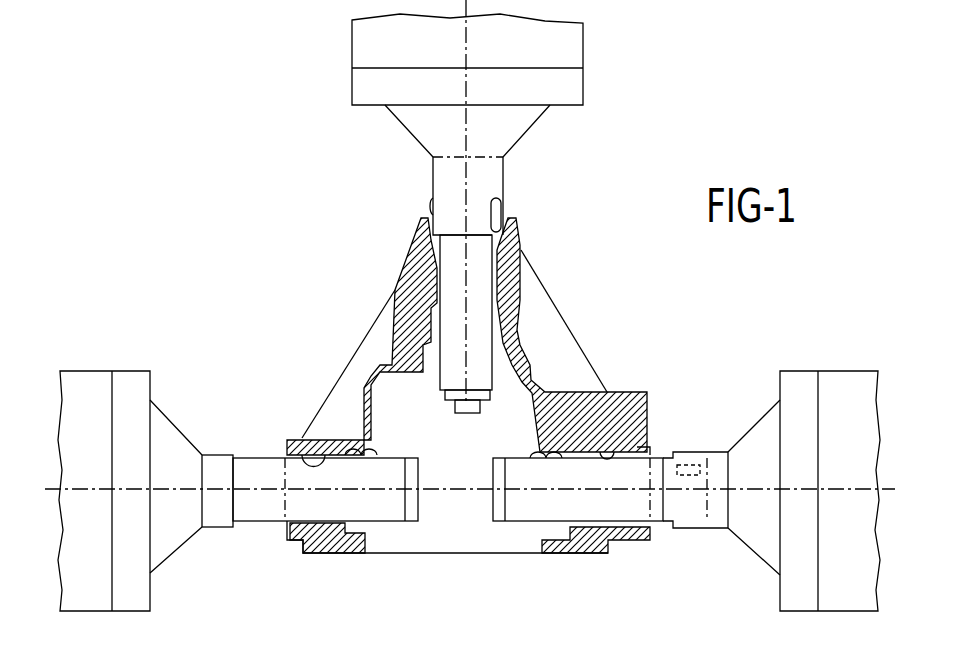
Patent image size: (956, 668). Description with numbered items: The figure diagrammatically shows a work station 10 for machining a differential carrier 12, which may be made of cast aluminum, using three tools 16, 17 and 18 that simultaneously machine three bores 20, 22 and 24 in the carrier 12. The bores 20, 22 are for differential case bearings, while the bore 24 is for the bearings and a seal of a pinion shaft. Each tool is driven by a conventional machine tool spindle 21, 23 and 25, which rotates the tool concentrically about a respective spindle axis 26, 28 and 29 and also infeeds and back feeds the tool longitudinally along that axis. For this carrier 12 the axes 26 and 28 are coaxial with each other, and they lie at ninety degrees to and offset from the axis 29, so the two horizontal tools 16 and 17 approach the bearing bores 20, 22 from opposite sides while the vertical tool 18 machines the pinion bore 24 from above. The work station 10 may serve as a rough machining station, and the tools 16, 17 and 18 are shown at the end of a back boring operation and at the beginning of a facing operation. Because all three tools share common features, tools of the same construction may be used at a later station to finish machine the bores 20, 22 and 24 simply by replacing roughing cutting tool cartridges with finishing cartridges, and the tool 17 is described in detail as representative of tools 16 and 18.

The work station 10 is at (616, 267).
The differential carrier 12 is at (568, 340).
The tool 16 is at (522, 527).
The tool 17 is at (400, 523).
The tool 18 is at (481, 378).
The bore 20 is at (640, 433).
The machine tool spindle 21 is at (833, 603).
The bore 22 is at (300, 446).
The machine tool spindle 23 is at (90, 603).
The bore 24 is at (492, 290).
The machine tool spindle 25 is at (578, 57).
The spindle axis 26 is at (858, 492).
The spindle axis 28 is at (92, 488).
The spindle axis 29 is at (466, 42).